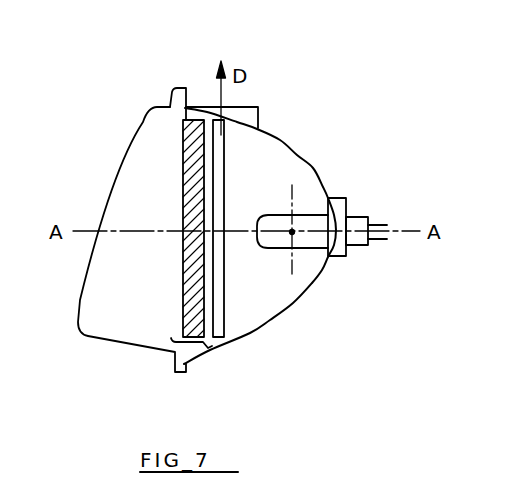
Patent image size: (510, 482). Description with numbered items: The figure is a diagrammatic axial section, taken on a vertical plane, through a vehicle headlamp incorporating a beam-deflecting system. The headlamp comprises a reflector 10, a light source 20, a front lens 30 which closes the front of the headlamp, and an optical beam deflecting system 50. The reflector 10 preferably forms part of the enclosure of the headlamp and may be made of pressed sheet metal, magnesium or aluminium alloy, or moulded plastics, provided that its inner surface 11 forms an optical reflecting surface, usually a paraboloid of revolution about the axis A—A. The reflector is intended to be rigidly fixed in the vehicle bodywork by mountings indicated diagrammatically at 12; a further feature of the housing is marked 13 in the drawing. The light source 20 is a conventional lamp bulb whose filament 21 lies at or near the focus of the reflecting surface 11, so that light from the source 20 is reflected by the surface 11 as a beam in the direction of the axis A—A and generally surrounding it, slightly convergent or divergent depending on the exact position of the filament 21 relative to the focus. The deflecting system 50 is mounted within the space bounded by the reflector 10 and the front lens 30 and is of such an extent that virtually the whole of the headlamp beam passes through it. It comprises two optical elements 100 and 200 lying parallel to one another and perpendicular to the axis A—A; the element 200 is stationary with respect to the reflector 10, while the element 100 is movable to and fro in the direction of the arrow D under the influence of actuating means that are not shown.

The reflector 10 is at (313, 165).
The inner surface 11 is at (275, 144).
The mountings 12 is at (258, 115).
The housing tab 13 is at (190, 90).
The light source 20 is at (305, 241).
The filament 21 is at (289, 237).
The front lens 30 is at (112, 190).
The optical beam deflecting system 50 is at (208, 350).
The optical element 100 is at (222, 317).
The optical element 200 is at (190, 187).